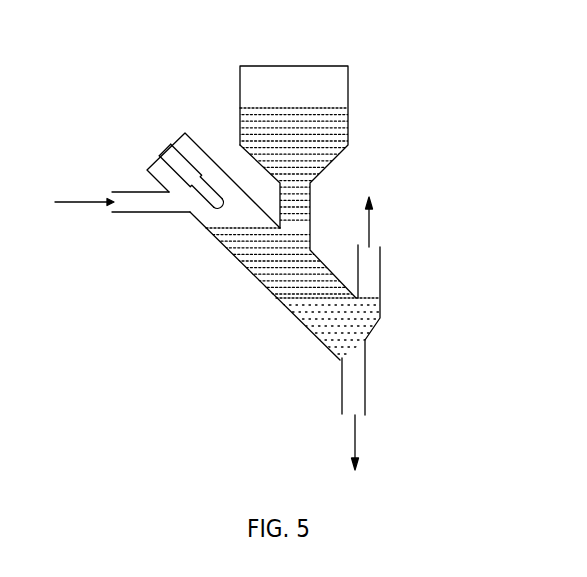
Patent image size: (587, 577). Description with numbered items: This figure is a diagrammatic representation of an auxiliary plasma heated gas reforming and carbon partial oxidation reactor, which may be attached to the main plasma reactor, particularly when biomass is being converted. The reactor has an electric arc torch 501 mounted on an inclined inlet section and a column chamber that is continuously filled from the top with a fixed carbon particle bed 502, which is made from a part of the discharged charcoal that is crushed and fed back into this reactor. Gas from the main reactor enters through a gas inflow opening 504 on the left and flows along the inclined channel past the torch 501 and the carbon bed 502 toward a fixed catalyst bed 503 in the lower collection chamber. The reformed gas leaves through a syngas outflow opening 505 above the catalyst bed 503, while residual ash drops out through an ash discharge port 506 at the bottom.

The electric arc torch 501 is at (213, 144).
The fixed carbon particle bed 502 is at (312, 202).
The fixed catalyst bed 503 is at (380, 314).
The gas inflow opening 504 is at (137, 202).
The syngas outflow opening 505 is at (372, 287).
The ash discharge port 506 is at (357, 390).